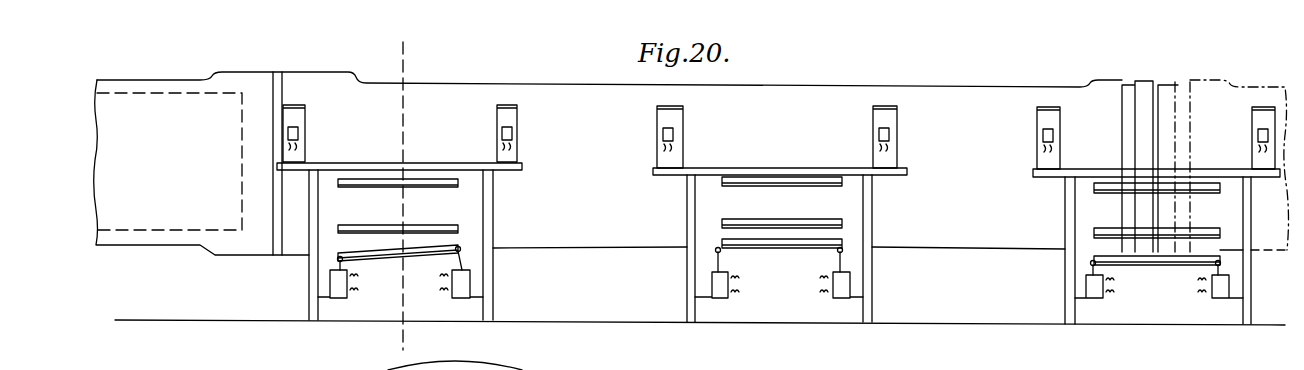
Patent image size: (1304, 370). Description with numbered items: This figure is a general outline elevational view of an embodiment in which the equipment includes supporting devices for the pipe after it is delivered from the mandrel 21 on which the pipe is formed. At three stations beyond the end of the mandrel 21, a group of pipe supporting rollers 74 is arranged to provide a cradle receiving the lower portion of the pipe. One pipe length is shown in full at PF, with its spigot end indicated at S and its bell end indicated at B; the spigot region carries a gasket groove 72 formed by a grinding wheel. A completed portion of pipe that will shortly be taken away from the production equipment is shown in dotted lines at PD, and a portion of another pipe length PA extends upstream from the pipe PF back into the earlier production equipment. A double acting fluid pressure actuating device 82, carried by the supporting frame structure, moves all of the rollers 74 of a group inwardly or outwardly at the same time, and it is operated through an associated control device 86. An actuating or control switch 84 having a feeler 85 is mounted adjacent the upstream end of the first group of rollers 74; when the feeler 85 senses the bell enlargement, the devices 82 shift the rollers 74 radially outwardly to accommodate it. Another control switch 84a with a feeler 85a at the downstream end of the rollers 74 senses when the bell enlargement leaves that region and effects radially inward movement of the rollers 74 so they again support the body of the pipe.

The pipe length PA is at (157, 79).
The bell end B is at (306, 70).
The mandrel 21 is at (382, 54).
The double acting fluid pressure actuating device 82 is at (305, 118).
The control device 86 is at (298, 133).
The pipe supporting rollers 74 is at (440, 250).
The feeler 85 is at (343, 262).
The feeler 85a is at (460, 251).
The actuating or control switch 84 is at (340, 286).
The control switch 84a is at (470, 283).
The pipe length PF is at (846, 84).
The spigot end S is at (1084, 81).
The gasket groove 72 is at (1125, 82).
The pipe PD is at (1255, 84).